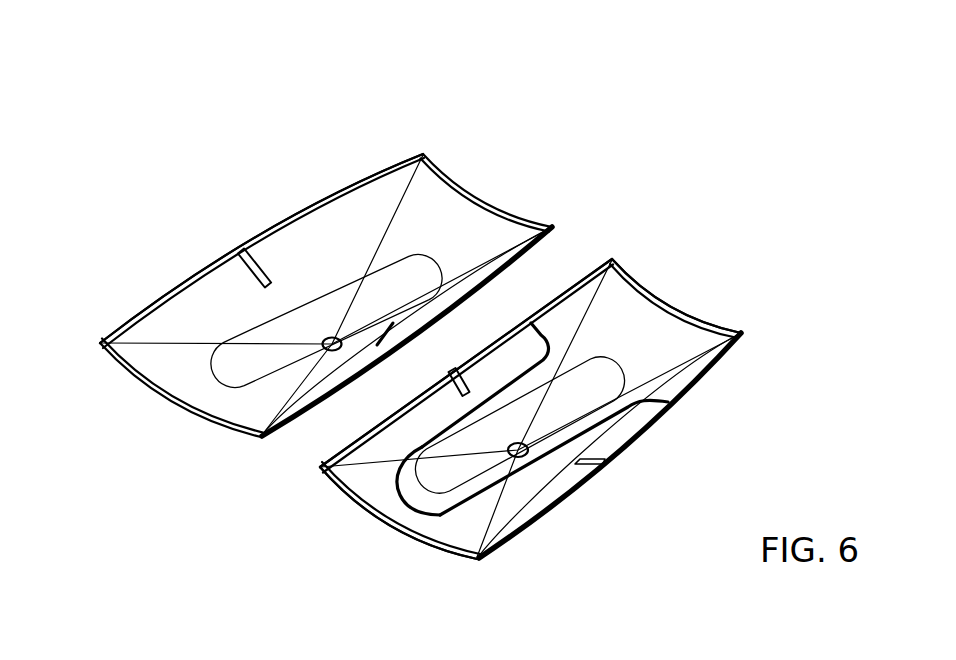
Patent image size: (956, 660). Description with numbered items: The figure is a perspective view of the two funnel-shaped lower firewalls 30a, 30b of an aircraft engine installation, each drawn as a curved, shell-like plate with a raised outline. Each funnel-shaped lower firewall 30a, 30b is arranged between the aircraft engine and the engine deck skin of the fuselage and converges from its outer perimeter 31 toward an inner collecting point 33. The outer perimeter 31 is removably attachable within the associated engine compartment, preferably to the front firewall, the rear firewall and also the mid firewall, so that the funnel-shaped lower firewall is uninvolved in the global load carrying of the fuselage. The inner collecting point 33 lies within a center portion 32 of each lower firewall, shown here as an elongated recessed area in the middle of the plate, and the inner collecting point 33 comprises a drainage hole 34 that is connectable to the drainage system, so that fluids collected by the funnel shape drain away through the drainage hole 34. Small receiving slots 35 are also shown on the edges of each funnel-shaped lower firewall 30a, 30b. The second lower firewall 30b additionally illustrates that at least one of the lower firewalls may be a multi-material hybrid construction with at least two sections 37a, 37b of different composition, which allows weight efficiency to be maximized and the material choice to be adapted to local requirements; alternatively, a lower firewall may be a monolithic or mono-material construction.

The funnel-shaped lower firewall 30a is at (457, 218).
The funnel-shaped lower firewall 30b is at (630, 312).
The outer perimeter 31 is at (321, 199).
The center portion 32 is at (410, 252).
The inner collecting point 33 is at (323, 338).
The drainage hole 34 is at (322, 347).
The receiving slot 35 is at (258, 279).
The section 37a is at (374, 483).
The section 37b is at (662, 337).